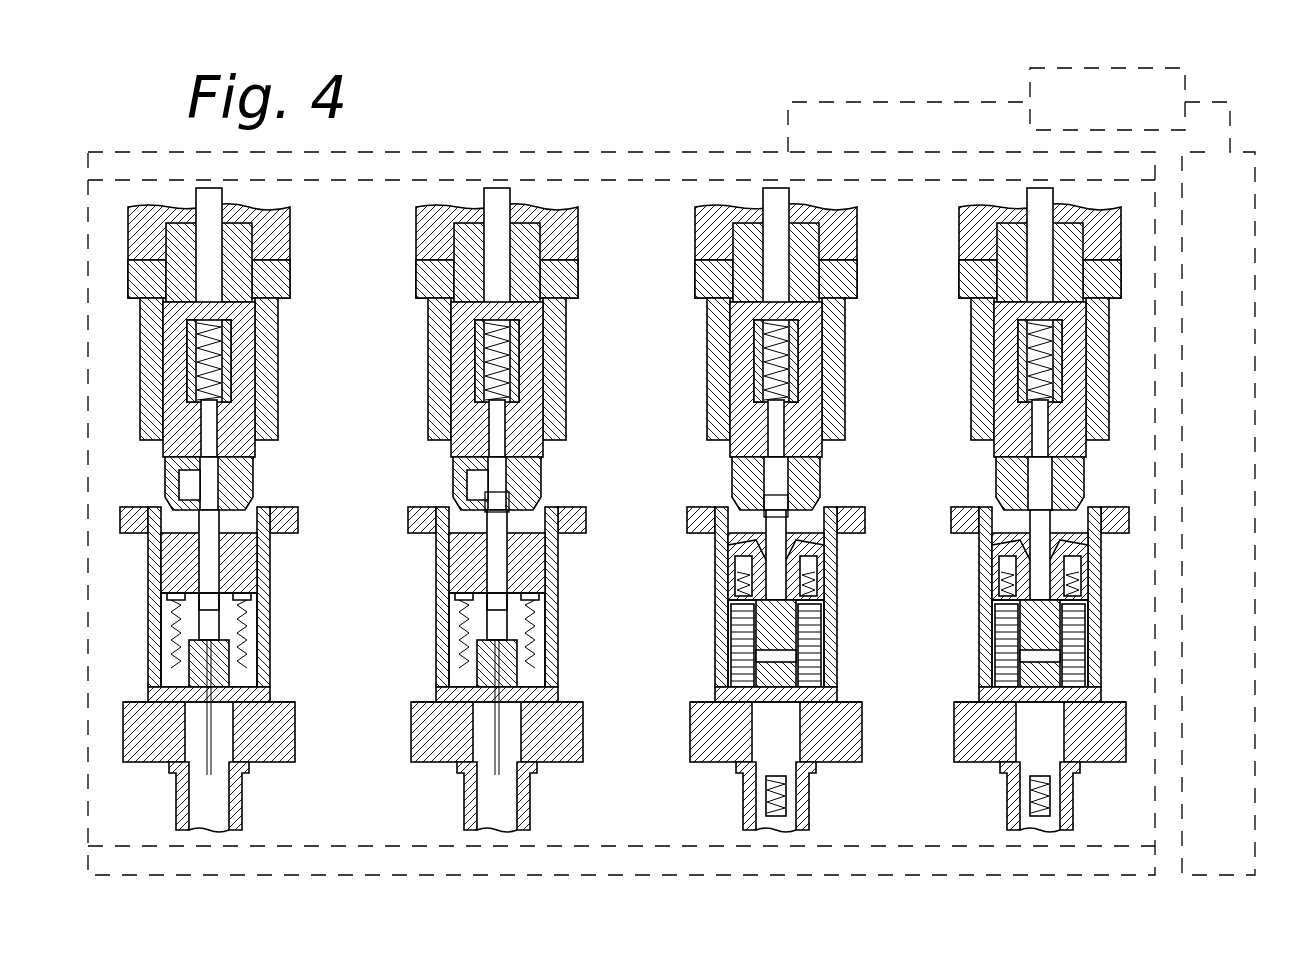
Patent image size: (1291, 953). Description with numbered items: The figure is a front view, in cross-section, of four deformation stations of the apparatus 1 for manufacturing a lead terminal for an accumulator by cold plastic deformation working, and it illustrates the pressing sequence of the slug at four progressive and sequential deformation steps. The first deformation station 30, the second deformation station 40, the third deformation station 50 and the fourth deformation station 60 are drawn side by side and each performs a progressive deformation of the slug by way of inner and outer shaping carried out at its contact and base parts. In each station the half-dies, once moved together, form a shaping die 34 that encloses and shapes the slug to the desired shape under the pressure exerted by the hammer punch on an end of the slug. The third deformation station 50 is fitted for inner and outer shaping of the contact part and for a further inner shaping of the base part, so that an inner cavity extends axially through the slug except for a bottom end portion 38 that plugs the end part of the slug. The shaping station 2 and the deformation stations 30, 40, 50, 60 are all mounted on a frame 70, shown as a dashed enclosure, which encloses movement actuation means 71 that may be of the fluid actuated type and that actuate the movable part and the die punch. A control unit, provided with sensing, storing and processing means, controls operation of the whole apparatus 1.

The apparatus 1 is at (548, 133).
The shaping station 2 is at (1247, 168).
The first deformation station 30 is at (1122, 196).
The shaping die 34 is at (810, 497).
The bottom end portion 38 is at (456, 490).
The second deformation station 40 is at (837, 196).
The third deformation station 50 is at (592, 195).
The fourth deformation station 60 is at (332, 198).
The frame 70 is at (113, 165).
The movement actuation means 71 is at (942, 165).